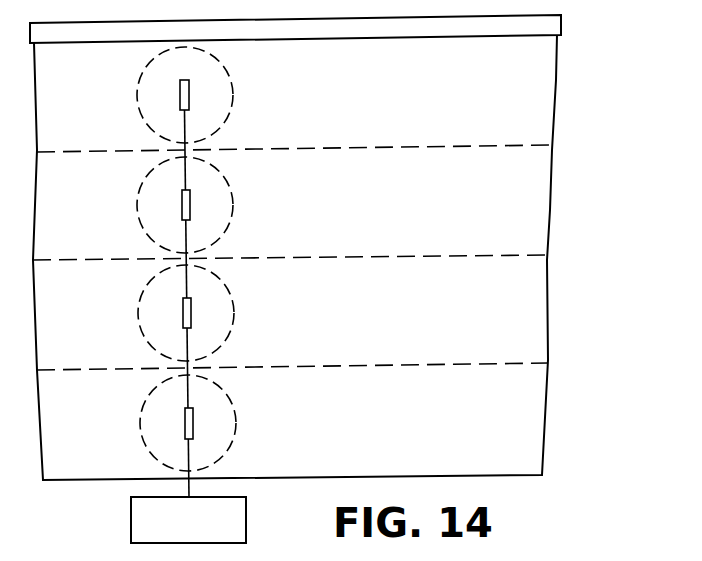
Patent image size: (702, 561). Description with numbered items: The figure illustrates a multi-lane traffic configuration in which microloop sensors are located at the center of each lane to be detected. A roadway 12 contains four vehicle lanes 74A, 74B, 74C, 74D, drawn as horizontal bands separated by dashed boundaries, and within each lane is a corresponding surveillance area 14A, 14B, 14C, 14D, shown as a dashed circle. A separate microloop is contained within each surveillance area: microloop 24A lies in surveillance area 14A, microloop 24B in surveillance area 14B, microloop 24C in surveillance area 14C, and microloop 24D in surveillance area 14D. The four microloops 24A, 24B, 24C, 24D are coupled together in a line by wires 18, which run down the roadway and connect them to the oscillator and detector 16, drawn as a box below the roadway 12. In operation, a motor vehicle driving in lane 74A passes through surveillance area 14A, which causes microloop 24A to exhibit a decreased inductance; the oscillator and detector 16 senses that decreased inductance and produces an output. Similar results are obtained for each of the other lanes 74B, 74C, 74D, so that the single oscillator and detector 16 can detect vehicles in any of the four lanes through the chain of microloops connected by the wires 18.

The roadway 12 is at (556, 208).
The surveillance area 14A is at (227, 123).
The surveillance area 14B is at (232, 212).
The surveillance area 14C is at (233, 325).
The surveillance area 14D is at (235, 440).
The oscillator and detector 16 is at (131, 524).
The wires 18 is at (189, 456).
The microloop 24A is at (189, 92).
The microloop 24B is at (190, 203).
The microloop 24C is at (191, 311).
The microloop 24D is at (193, 421).
The vehicle lane 74A is at (503, 96).
The vehicle lane 74B is at (498, 205).
The vehicle lane 74C is at (496, 313).
The vehicle lane 74D is at (292, 397).